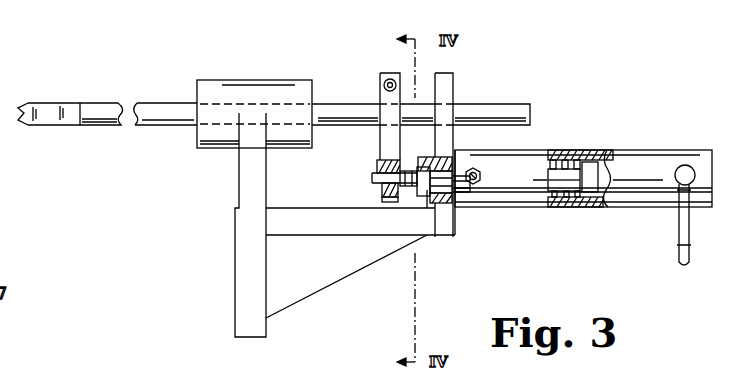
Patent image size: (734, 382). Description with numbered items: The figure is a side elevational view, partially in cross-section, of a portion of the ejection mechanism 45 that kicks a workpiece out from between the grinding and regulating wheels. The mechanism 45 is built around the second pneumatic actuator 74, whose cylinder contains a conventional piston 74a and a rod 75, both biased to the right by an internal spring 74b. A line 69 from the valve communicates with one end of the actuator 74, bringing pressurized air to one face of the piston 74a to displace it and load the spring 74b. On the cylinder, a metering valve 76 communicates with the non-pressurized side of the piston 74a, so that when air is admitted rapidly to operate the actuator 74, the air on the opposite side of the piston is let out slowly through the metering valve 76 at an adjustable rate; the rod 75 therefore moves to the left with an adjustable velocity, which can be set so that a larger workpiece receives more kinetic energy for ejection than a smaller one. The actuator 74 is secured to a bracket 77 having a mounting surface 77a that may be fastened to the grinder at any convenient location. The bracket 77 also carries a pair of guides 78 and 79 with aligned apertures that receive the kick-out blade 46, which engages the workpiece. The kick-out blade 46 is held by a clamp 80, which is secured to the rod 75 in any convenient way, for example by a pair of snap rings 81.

The ejection mechanism 45 is at (526, 93).
The kick-out blade 46 is at (120, 104).
The line 69 is at (689, 240).
The second pneumatic actuator 74 is at (612, 212).
The piston 74a is at (593, 172).
The internal spring 74b is at (560, 141).
The rod 75 is at (411, 171).
The metering valve 76 is at (476, 184).
The bracket 77 is at (430, 220).
The mounting surface 77a is at (235, 259).
The guide 78 is at (444, 91).
The guide 79 is at (290, 92).
The clamp 80 is at (385, 142).
The snap rings 81 is at (379, 179).